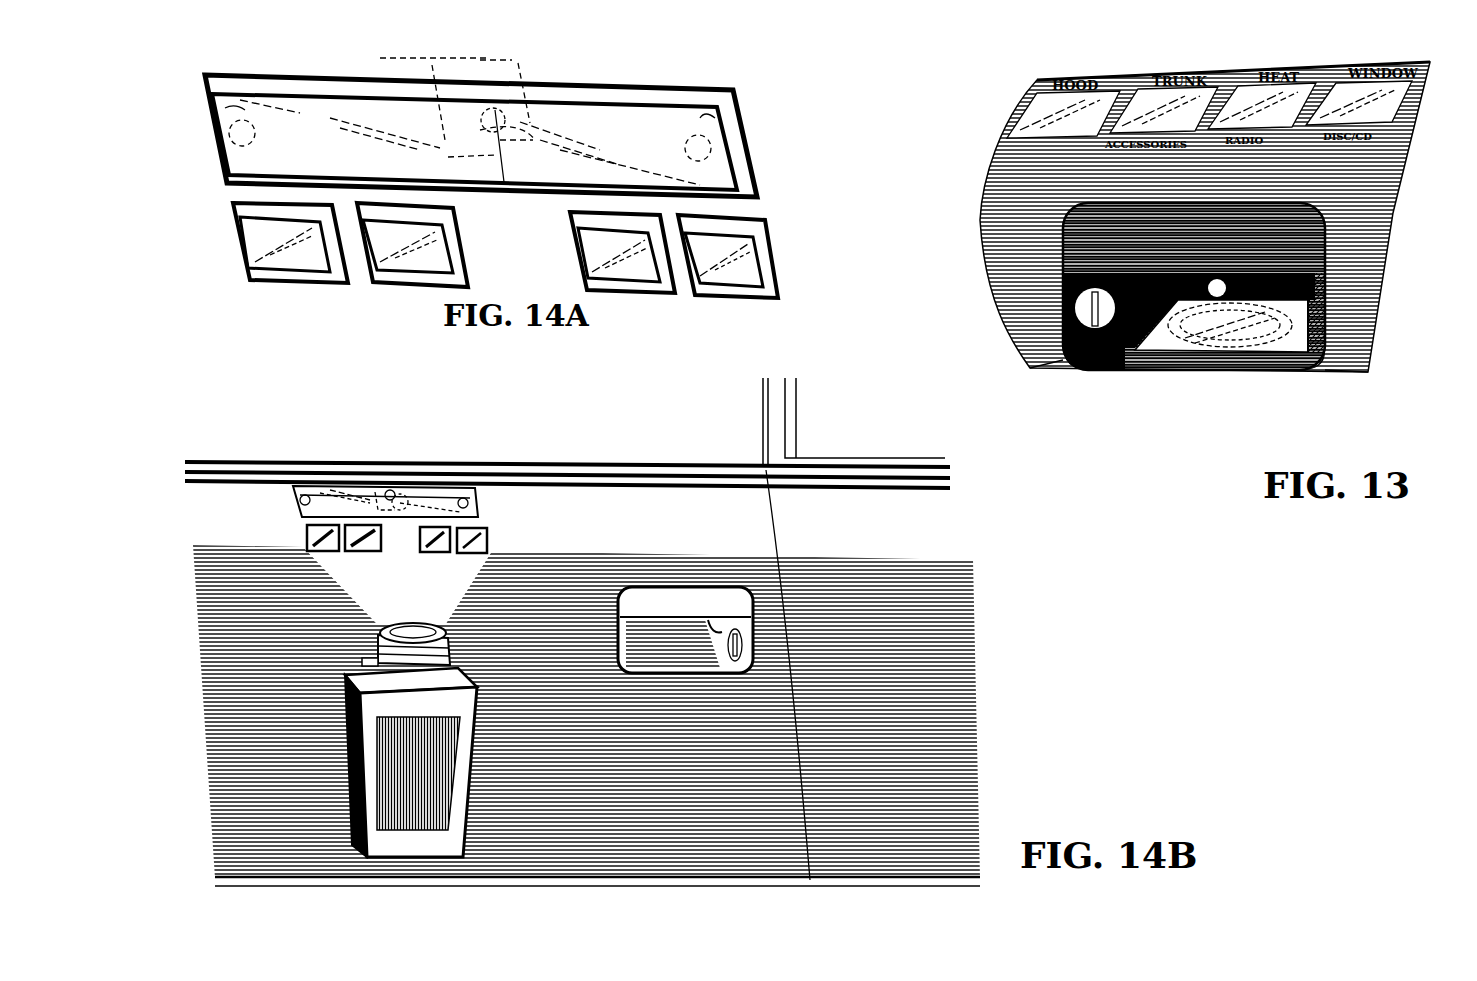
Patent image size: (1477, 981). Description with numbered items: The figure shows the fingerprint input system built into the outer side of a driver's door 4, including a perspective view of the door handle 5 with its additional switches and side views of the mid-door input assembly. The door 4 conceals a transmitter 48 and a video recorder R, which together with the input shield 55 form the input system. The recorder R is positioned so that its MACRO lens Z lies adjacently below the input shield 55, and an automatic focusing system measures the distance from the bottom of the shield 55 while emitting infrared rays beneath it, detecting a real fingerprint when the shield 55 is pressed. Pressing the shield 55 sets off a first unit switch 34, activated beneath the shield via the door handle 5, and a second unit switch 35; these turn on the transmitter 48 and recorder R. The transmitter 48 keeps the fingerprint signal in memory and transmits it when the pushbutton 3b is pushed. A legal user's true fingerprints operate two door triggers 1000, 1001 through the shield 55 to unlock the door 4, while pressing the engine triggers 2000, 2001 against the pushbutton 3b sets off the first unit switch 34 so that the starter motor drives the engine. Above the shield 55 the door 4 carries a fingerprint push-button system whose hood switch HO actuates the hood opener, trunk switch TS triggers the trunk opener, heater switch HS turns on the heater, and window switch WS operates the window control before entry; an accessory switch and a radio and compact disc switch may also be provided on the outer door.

In FIG. 14A, the driver's door 4 is at (755, 205).
In FIG. 13, the driver's door 4 is at (985, 152).
In FIG. 14B, the driver's door 4 is at (740, 465).
In FIG. 14A, the first unit switch 34 is at (240, 118).
In FIG. 14B, the first unit switch 34 is at (295, 500).
In FIG. 14A, the second unit switch 35 is at (698, 135).
In FIG. 14B, the second unit switch 35 is at (480, 502).
In FIG. 14A, the input shield 55 is at (226, 109).
In FIG. 13, the input shield 55 is at (1297, 346).
In FIG. 14B, the input shield 55 is at (365, 497).
In FIG. 14A, the transmitter 48 is at (400, 60).
In FIG. 14B, the transmitter 48 is at (385, 490).
In FIG. 14A, the pushbutton 3b is at (500, 108).
In FIG. 14B, the pushbutton 3b is at (400, 490).
In FIG. 14A, the door trigger 1000 is at (540, 135).
In FIG. 14B, the door trigger 1000 is at (477, 488).
In FIG. 14A, the engine trigger 2000 is at (470, 170).
In FIG. 14B, the engine trigger 2000 is at (335, 490).
In FIG. 14A, the hood switch HO is at (295, 283).
In FIG. 13, the hood switch HO is at (1035, 112).
In FIG. 14B, the hood switch HO is at (310, 538).
In FIG. 14A, the trunk switch TS is at (460, 212).
In FIG. 13, the trunk switch TS is at (1213, 92).
In FIG. 14B, the trunk switch TS is at (408, 530).
In FIG. 14A, the heater switch HS is at (580, 262).
In FIG. 13, the heater switch HS is at (1305, 90).
In FIG. 14B, the heater switch HS is at (447, 553).
In FIG. 14A, the window switch WS is at (742, 300).
In FIG. 13, the window switch WS is at (1410, 78).
In FIG. 14B, the window switch WS is at (490, 536).
In FIG. 13, the door handle 5 is at (1243, 366).
In FIG. 13, the video recorder R is at (1297, 328).
In FIG. 14B, the video recorder R is at (215, 823).
In FIG. 13, the lens Z is at (1230, 342).
In FIG. 14B, the lens Z is at (215, 620).
In FIG. 13, the engine trigger 2001 is at (1063, 358).
In FIG. 13, the door trigger 1001 is at (1330, 369).